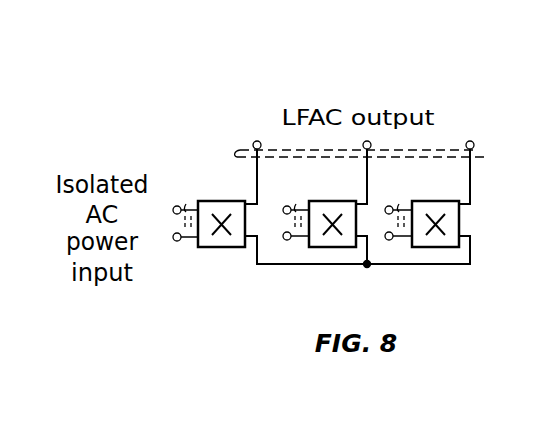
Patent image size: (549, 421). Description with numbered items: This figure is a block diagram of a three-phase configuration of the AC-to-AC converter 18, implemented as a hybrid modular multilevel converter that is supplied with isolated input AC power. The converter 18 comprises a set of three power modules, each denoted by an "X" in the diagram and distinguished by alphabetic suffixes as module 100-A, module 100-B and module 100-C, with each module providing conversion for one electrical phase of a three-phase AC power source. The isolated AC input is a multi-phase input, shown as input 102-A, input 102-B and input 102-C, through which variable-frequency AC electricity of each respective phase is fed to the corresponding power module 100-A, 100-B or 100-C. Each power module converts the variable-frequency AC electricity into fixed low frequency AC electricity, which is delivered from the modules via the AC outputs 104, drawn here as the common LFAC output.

The AC-to-AC converter 18 is at (182, 98).
The power module 100-A is at (240, 200).
The power module 100-B is at (351, 200).
The power module 100-C is at (455, 200).
The AC input 102-A is at (181, 247).
The AC input 102-B is at (292, 247).
The AC input 102-C is at (399, 247).
The AC outputs 104 is at (483, 153).